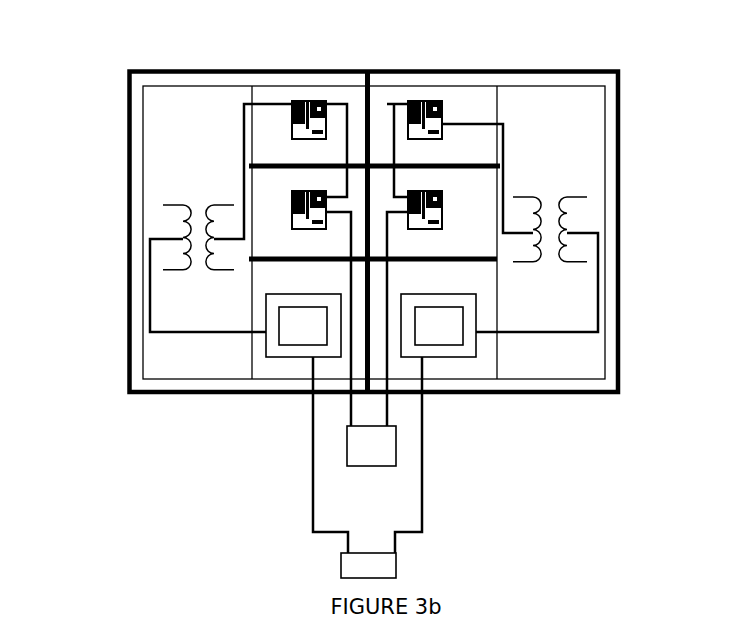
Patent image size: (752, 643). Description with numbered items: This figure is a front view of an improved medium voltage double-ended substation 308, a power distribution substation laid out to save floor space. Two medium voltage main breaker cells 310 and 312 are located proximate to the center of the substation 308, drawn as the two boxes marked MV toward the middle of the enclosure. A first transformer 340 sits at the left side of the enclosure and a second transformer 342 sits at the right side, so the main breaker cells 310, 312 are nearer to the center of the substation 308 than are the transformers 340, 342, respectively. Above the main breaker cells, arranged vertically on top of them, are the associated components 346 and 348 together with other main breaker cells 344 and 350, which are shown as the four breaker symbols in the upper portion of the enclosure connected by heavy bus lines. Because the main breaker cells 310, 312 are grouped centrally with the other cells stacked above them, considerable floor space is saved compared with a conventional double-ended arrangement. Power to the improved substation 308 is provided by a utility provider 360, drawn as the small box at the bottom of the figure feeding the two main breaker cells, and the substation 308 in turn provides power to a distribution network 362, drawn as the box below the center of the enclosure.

The medium voltage double-ended substation 308 is at (612, 450).
The medium voltage main breaker cell 310 is at (469, 357).
The medium voltage main breaker cell 312 is at (281, 357).
The first transformer 340 is at (170, 219).
The second transformer 342 is at (577, 218).
The main breaker cell 344 is at (292, 207).
The associated component 346 is at (320, 101).
The associated component 348 is at (414, 101).
The main breaker cell 350 is at (442, 200).
The utility provider 360 is at (341, 566).
The distribution network 362 is at (367, 466).